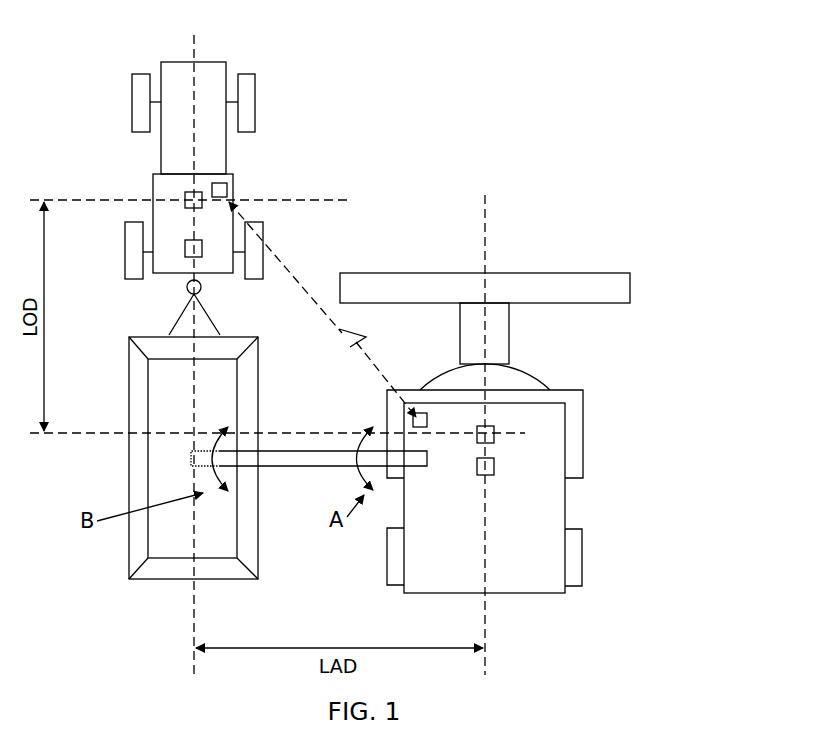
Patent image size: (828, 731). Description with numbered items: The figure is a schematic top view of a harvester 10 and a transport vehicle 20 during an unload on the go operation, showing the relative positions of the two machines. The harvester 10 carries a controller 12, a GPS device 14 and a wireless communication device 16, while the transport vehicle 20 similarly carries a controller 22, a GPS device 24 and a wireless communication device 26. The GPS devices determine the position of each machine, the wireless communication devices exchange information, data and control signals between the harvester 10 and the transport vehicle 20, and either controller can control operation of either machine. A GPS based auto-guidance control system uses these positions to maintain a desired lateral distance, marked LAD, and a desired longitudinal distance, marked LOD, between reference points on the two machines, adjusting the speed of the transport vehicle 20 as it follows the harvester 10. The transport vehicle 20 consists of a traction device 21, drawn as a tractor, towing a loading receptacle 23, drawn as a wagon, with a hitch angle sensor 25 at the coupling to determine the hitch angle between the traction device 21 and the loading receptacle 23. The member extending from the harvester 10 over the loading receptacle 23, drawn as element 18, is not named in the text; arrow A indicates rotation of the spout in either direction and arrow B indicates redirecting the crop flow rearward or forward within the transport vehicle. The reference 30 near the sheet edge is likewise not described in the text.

The harvester 10 is at (520, 433).
The controller 12 is at (494, 466).
The GPS device 14 is at (490, 433).
The wireless communication device 16 is at (414, 420).
The hitch bar 18 is at (310, 467).
The transport vehicle 20 is at (176, 321).
The traction device 21 is at (205, 130).
The controller 22 is at (190, 248).
The loading receptacle 23 is at (248, 552).
The GPS device 24 is at (190, 196).
The hitch angle sensor 25 is at (189, 291).
The wireless communication device 26 is at (229, 186).
The controller 30 is at (84, 719).